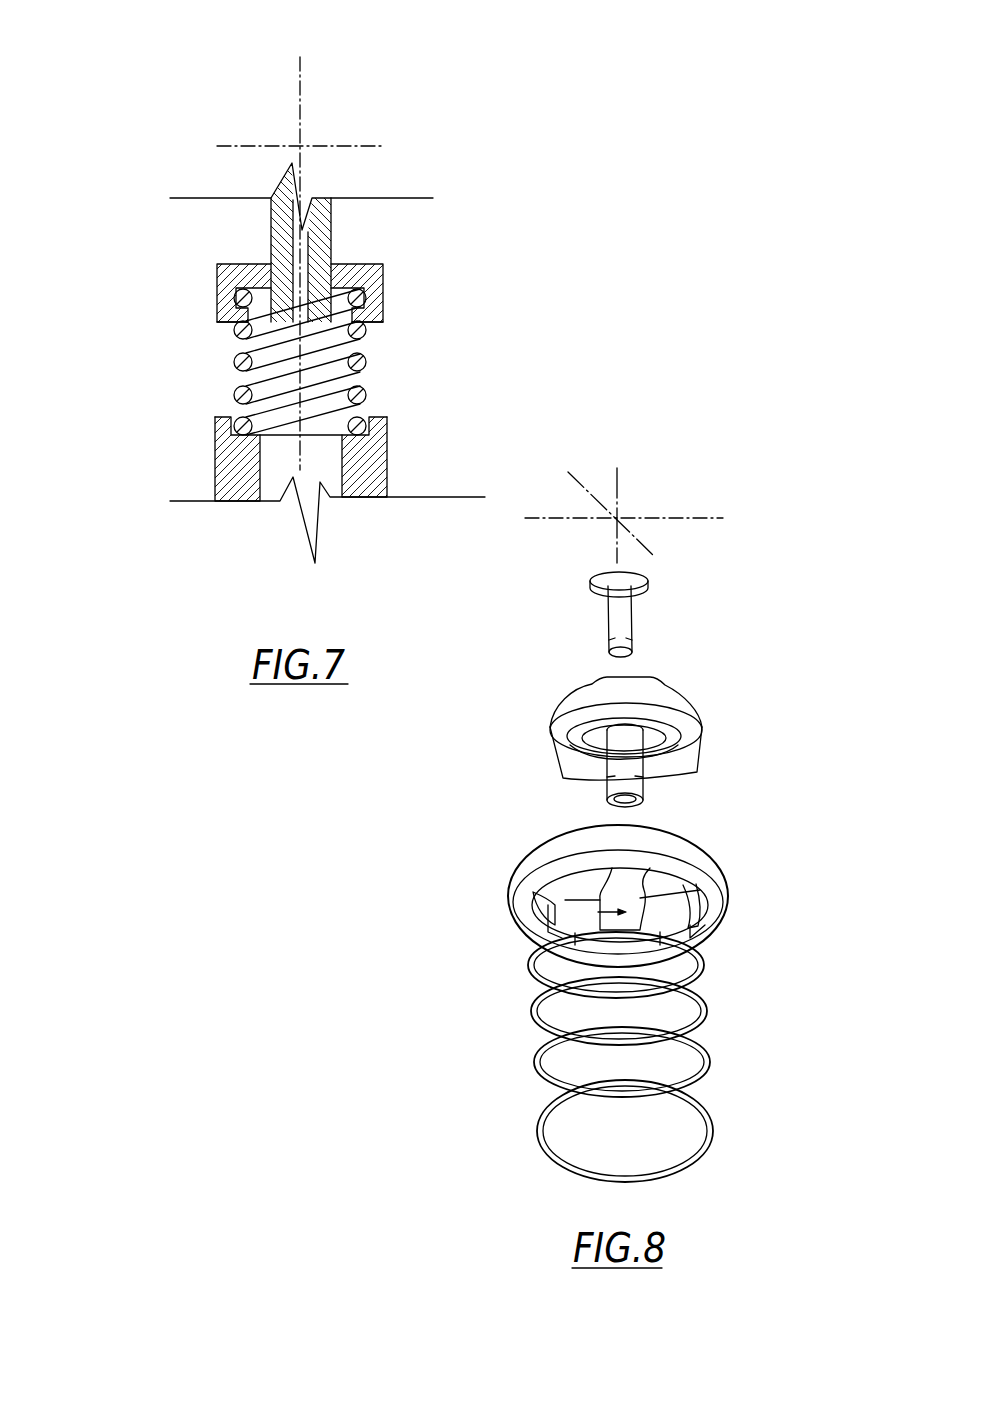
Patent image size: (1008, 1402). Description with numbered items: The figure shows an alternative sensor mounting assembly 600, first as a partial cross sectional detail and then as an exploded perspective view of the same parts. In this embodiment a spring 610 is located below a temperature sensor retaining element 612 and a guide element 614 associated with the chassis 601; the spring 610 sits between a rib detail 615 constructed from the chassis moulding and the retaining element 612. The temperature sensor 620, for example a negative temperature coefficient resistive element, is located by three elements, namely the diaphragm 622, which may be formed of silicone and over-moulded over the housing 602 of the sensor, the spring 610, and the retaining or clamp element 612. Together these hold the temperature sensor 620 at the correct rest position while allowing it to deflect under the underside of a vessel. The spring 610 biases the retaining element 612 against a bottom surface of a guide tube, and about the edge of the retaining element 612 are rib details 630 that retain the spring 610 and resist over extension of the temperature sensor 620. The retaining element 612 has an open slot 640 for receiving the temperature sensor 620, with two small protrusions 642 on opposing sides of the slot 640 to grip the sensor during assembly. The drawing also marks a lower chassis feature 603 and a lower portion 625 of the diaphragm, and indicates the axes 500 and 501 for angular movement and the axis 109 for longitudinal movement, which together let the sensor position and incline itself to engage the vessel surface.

In FIG. 7, the axis 109 is at (298, 78).
In FIG. 8, the axis 109 is at (618, 484).
In FIG. 7, the axis 500 is at (262, 145).
In FIG. 8, the axis 500 is at (563, 518).
In FIG. 8, the axis 501 is at (655, 544).
In FIG. 7, the sensor mounting assembly 600 is at (436, 118).
In FIG. 7, the chassis 601 is at (187, 503).
In FIG. 7, the housing 602 is at (273, 218).
In FIG. 7, the flange underside 603 is at (218, 309).
In FIG. 7, the spring 610 is at (365, 384).
In FIG. 8, the spring 610 is at (555, 1160).
In FIG. 7, the retaining element 612 is at (384, 288).
In FIG. 8, the retaining element 612 is at (562, 855).
In FIG. 7, the guide element 614 is at (383, 470).
In FIG. 7, the rib detail 615 is at (386, 421).
In FIG. 7, the temperature sensor 620 is at (297, 245).
In FIG. 8, the temperature sensor 620 is at (620, 616).
In FIG. 8, the diaphragm 622 is at (643, 703).
In FIG. 8, the tube 625 is at (625, 760).
In FIG. 7, the rib details 630 is at (383, 306).
In FIG. 8, the rib details 630 is at (548, 892).
In FIG. 8, the open slot 640 is at (570, 915).
In FIG. 8, the protrusions 642 is at (605, 869).